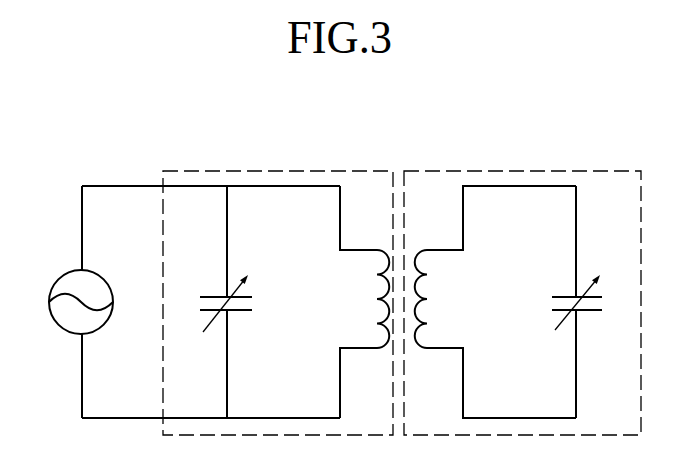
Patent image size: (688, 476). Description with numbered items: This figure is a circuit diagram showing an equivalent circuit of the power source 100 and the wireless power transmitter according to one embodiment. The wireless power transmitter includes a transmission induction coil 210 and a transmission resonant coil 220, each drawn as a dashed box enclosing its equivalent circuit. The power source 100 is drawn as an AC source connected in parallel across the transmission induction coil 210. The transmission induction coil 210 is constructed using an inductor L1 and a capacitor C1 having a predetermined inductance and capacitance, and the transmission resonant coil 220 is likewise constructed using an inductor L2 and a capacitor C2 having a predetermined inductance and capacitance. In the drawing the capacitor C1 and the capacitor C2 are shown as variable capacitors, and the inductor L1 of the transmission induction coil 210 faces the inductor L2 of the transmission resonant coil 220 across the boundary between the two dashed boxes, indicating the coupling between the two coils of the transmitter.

The power source 100 is at (58, 279).
The transmission induction coil 210 is at (307, 170).
The transmission resonant coil 220 is at (468, 170).
The capacitor C1 is at (213, 302).
The inductor L1 is at (366, 299).
The inductor L2 is at (438, 299).
The capacitor C2 is at (594, 302).